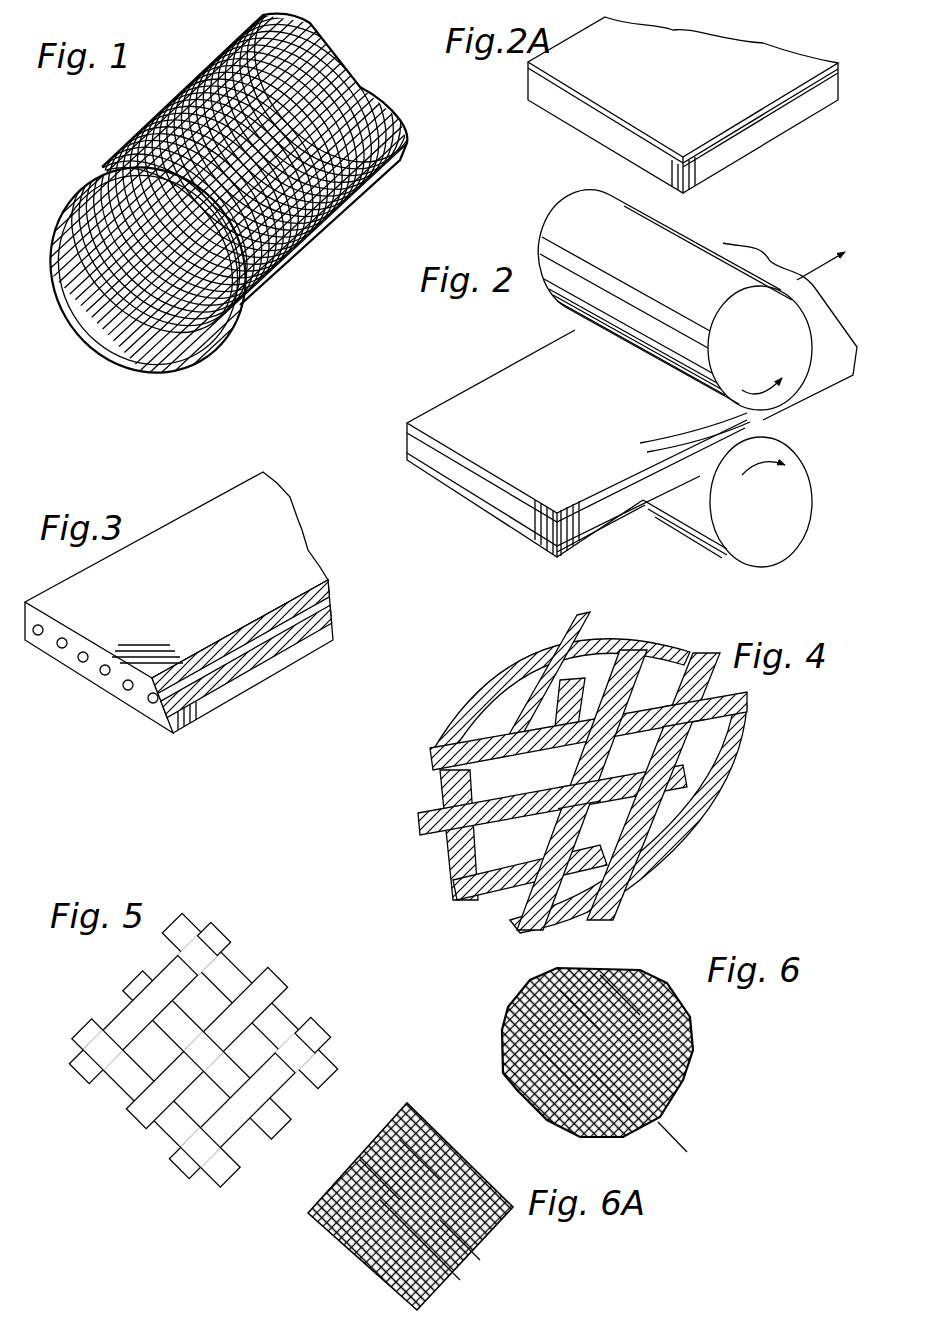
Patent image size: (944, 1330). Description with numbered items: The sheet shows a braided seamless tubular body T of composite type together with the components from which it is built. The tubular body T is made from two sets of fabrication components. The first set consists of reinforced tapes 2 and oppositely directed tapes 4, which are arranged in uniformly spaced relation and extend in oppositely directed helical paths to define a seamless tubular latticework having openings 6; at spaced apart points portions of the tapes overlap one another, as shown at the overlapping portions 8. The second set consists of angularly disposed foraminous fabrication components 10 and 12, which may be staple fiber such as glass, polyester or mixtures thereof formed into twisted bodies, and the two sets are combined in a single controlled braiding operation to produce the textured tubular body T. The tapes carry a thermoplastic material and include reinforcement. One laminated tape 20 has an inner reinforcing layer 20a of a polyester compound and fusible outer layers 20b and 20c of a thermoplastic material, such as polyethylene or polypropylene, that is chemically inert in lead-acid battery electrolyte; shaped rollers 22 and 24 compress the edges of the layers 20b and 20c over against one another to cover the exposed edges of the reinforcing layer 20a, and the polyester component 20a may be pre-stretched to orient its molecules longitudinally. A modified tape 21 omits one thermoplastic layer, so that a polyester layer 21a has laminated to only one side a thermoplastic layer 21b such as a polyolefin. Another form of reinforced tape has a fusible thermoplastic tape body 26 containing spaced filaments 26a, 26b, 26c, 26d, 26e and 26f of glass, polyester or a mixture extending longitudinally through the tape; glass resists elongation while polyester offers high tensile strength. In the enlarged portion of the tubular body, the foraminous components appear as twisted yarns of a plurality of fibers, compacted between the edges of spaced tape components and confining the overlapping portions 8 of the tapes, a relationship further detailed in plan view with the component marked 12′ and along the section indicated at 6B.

In FIG. 1, the seamless tubular body T is at (362, 62).
In FIG. 1, the reinforced tapes 2 is at (223, 42).
In FIG. 4, the reinforced tapes 2 is at (640, 622).
In FIG. 5, the reinforced tapes 2 is at (230, 926).
In FIG. 6, the reinforced tapes 2 is at (689, 1040).
In FIG. 6A, the reinforced tapes 2 is at (467, 1142).
In FIG. 1, the oppositely directed tapes 4 is at (113, 138).
In FIG. 4, the oppositely directed tapes 4 is at (608, 635).
In FIG. 5, the oppositely directed tapes 4 is at (147, 967).
In FIG. 6, the oppositely directed tapes 4 is at (622, 980).
In FIG. 6A, the oppositely directed tapes 4 is at (362, 1145).
In FIG. 4, the openings 6 is at (730, 730).
In FIG. 5, the openings 6 is at (257, 1037).
In FIG. 1, the overlapping portions 8 is at (293, 44).
In FIG. 4, the overlapping portions 8 is at (637, 640).
In FIG. 5, the overlapping portions 8 is at (253, 1000).
In FIG. 6, the overlapping portions 8 is at (617, 1113).
In FIG. 6A, the overlapping portions 8 is at (461, 1248).
In FIG. 1, the angularly disposed fabrication component 10 is at (182, 80).
In FIG. 1, the angularly disposed fabrication component 12 is at (140, 113).
In FIG. 2, the tape 20 is at (450, 490).
In FIG. 2, the inner reinforcing layer 20a is at (604, 508).
In FIG. 2, the fusible outer layer 20b is at (408, 432).
In FIG. 2, the fusible outer layer 20c is at (407, 456).
In FIG. 2A, the tape 21 is at (575, 132).
In FIG. 2A, the polyester layer 21a is at (735, 142).
In FIG. 2A, the thermoplastic layer 21b is at (819, 76).
In FIG. 2, the roller 22 is at (658, 237).
In FIG. 2, the roller 24 is at (780, 555).
In FIG. 3, the fusible thermoplastic tape body 26 is at (70, 586).
In FIG. 3, the filament 26a is at (35, 637).
In FIG. 3, the filament 26b is at (60, 650).
In FIG. 3, the filament 26c is at (82, 665).
In FIG. 3, the filament 26d is at (103, 678).
In FIG. 3, the filament 26e is at (126, 693).
In FIG. 3, the filament 26f is at (152, 705).
In FIG. 6A, the strand surface 12′ is at (507, 1227).
In FIG. 6, the section line 6B is at (515, 980).